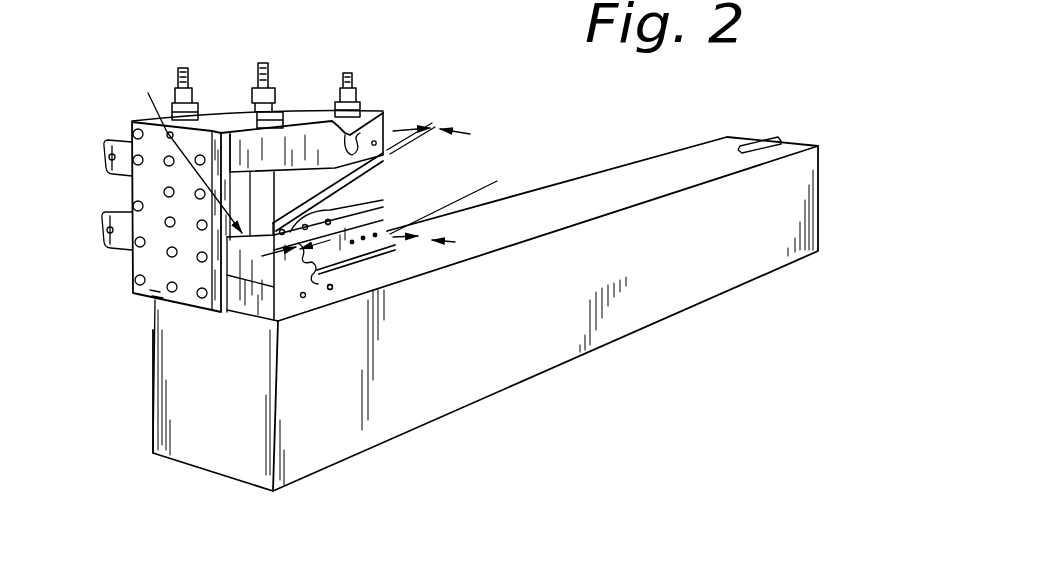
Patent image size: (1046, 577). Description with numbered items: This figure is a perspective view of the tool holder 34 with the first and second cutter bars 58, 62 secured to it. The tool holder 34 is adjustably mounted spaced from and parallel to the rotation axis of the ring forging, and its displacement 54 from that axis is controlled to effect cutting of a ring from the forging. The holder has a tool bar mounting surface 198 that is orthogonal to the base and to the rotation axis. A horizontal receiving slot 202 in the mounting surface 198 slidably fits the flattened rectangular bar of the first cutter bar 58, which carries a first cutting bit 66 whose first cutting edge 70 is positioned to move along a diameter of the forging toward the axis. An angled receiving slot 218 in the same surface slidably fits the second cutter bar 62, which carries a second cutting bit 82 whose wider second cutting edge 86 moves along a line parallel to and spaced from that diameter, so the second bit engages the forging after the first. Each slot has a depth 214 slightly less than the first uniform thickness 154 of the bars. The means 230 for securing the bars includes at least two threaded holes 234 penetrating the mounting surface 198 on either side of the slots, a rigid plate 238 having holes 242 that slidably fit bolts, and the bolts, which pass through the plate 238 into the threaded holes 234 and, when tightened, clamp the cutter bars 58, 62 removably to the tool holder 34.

The tool holder 34 is at (378, 180).
The displacement of the tool holder from the axis 54 is at (285, 528).
The first cutter bar 58 is at (288, 302).
The second cutter bar 62 is at (320, 147).
The first cutting bit 66 is at (108, 244).
The first cutting edge 70 is at (108, 236).
The second cutting bit 82 is at (108, 158).
The second cutting edge 86 is at (108, 152).
The first uniform thickness 154 is at (384, 199).
The tool bar mounting surface 198 is at (241, 306).
The horizontal receiving slot 202 is at (326, 149).
The depth 214 is at (430, 122).
The angled receiving slot 218 is at (256, 182).
The means for securing the cutter bars 230 is at (183, 303).
The threaded holes 234 is at (330, 225).
The rigid plate 238 is at (158, 283).
The holes 242 is at (160, 283).